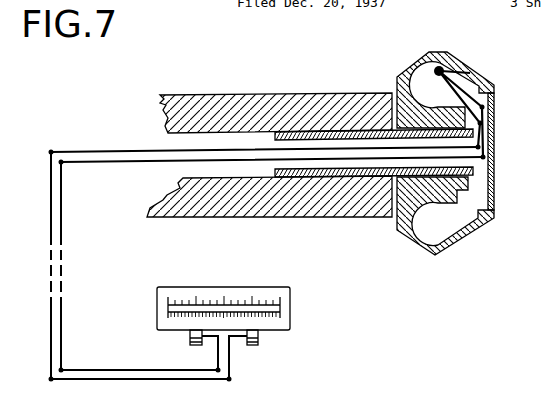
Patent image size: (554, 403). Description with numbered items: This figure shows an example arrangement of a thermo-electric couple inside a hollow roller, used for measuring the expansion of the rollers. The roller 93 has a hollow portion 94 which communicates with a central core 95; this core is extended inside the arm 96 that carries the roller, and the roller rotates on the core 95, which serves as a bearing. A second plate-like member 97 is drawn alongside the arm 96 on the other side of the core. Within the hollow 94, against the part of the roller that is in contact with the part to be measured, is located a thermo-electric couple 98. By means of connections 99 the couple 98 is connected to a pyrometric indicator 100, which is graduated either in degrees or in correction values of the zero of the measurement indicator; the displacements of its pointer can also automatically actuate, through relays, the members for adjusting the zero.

The roller 93 is at (441, 64).
The hollow portion 94 is at (452, 219).
The central core 95 is at (334, 141).
The arm 96 is at (225, 108).
The lower plate 97 is at (360, 173).
The thermo-electric couple 98 is at (470, 73).
The connections 99 is at (98, 150).
The pyrometric indicator 100 is at (285, 323).